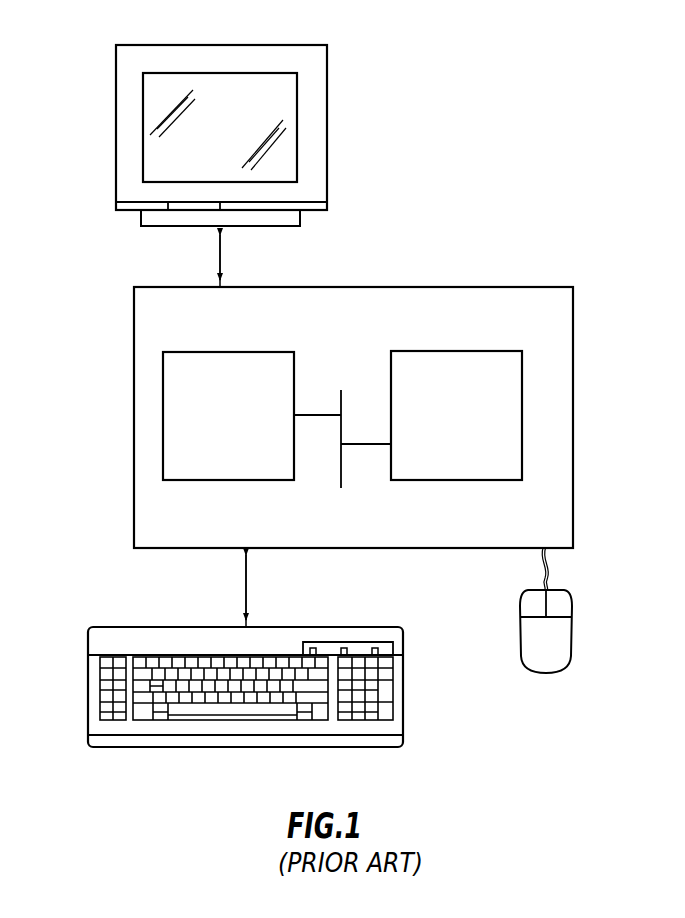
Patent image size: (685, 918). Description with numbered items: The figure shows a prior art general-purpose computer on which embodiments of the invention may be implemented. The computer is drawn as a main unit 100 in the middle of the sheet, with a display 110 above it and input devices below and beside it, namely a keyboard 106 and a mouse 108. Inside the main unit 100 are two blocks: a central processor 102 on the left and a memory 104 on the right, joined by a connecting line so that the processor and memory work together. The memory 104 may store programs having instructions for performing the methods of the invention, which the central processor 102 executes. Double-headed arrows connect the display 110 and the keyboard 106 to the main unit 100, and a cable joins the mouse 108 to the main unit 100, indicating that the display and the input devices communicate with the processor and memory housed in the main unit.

The main unit 100 is at (399, 417).
The central processor 102 is at (257, 426).
The memory 104 is at (484, 428).
The keyboard 106 is at (162, 747).
The mouse 108 is at (563, 653).
The display 110 is at (248, 142).